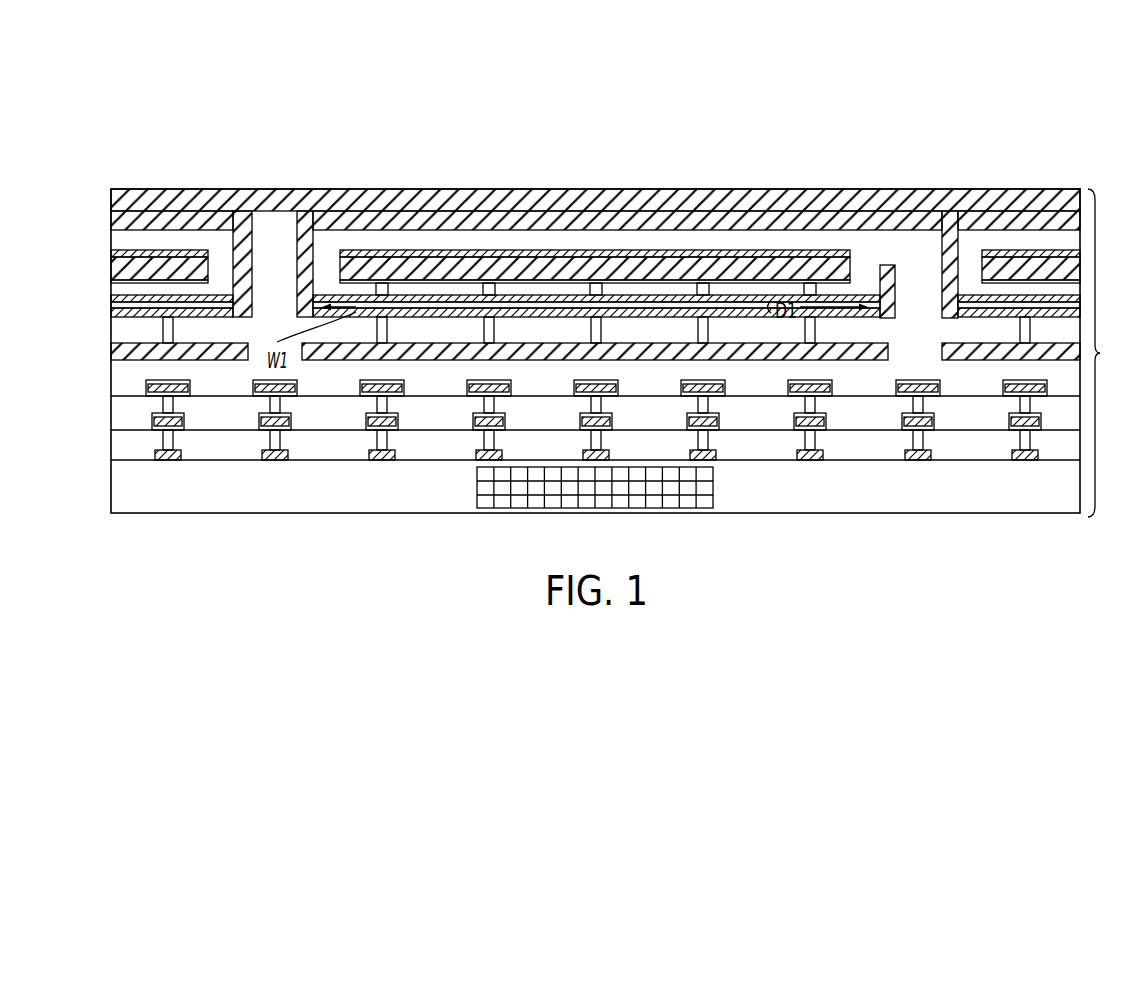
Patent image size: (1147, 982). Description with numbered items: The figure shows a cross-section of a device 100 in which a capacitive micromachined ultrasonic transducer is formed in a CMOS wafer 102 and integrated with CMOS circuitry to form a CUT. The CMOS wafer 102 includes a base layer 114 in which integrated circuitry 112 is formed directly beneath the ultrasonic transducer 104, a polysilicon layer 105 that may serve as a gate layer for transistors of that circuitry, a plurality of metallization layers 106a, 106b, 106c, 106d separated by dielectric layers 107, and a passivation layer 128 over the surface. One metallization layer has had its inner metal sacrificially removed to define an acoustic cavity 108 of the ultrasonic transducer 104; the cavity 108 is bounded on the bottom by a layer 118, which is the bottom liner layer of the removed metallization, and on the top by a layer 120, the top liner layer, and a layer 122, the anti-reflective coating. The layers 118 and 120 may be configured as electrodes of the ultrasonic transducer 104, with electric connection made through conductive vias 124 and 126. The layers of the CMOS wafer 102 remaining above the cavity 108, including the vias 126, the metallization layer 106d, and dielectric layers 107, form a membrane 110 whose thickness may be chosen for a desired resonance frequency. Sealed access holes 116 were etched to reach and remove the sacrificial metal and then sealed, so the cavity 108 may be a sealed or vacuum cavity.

The device 100 is at (150, 106).
The CMOS wafer 102 is at (1114, 353).
The ultrasonic transducer 104 is at (501, 238).
The polysilicon layer 105 is at (270, 460).
The metallization layer 106a is at (1035, 430).
The metallization layer 106b is at (932, 397).
The metallization layer 106c is at (843, 362).
The metallization layer 106d is at (793, 255).
The dielectric layers 107 is at (122, 442).
The acoustic cavity 108 is at (462, 312).
The membrane 110 is at (868, 192).
The integrated circuitry 112 is at (595, 487).
The base layer 114 is at (122, 490).
The sealed access holes 116 is at (321, 242).
The layer 118 is at (567, 313).
The layer 120 is at (760, 303).
The layer 122 is at (823, 297).
The via 124 is at (682, 305).
The via 126 is at (465, 285).
The passivation layer 128 is at (660, 200).